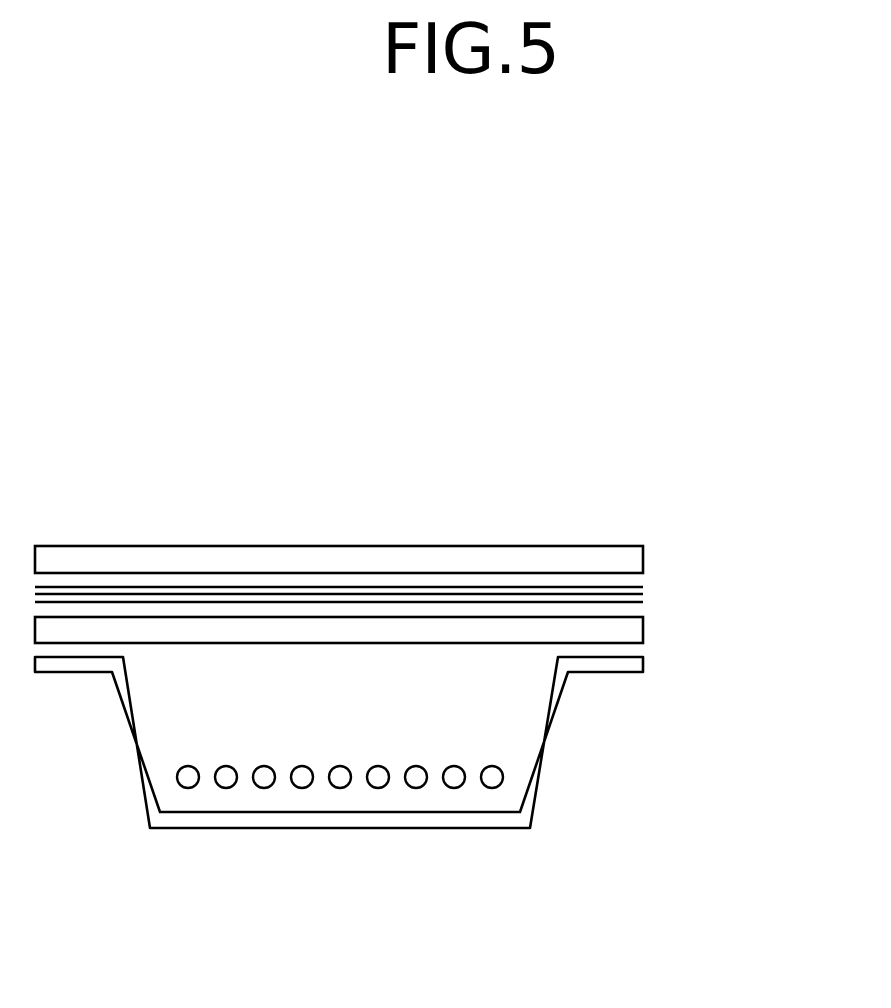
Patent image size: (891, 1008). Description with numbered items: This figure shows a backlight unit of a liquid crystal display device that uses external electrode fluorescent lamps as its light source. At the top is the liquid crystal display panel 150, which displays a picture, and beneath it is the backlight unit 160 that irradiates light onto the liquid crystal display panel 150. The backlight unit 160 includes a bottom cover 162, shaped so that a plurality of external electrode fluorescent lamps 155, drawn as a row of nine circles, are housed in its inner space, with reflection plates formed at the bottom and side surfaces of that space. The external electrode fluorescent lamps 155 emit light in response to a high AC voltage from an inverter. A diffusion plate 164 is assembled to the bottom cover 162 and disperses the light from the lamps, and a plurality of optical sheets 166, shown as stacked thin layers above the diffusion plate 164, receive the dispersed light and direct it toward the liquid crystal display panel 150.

The liquid crystal display panel 150 is at (645, 558).
The external electrode fluorescent lamps 155 is at (492, 798).
The backlight unit 160 is at (454, 704).
The bottom cover 162 is at (645, 667).
The diffusion plate 164 is at (645, 630).
The optical sheets 166 is at (652, 581).